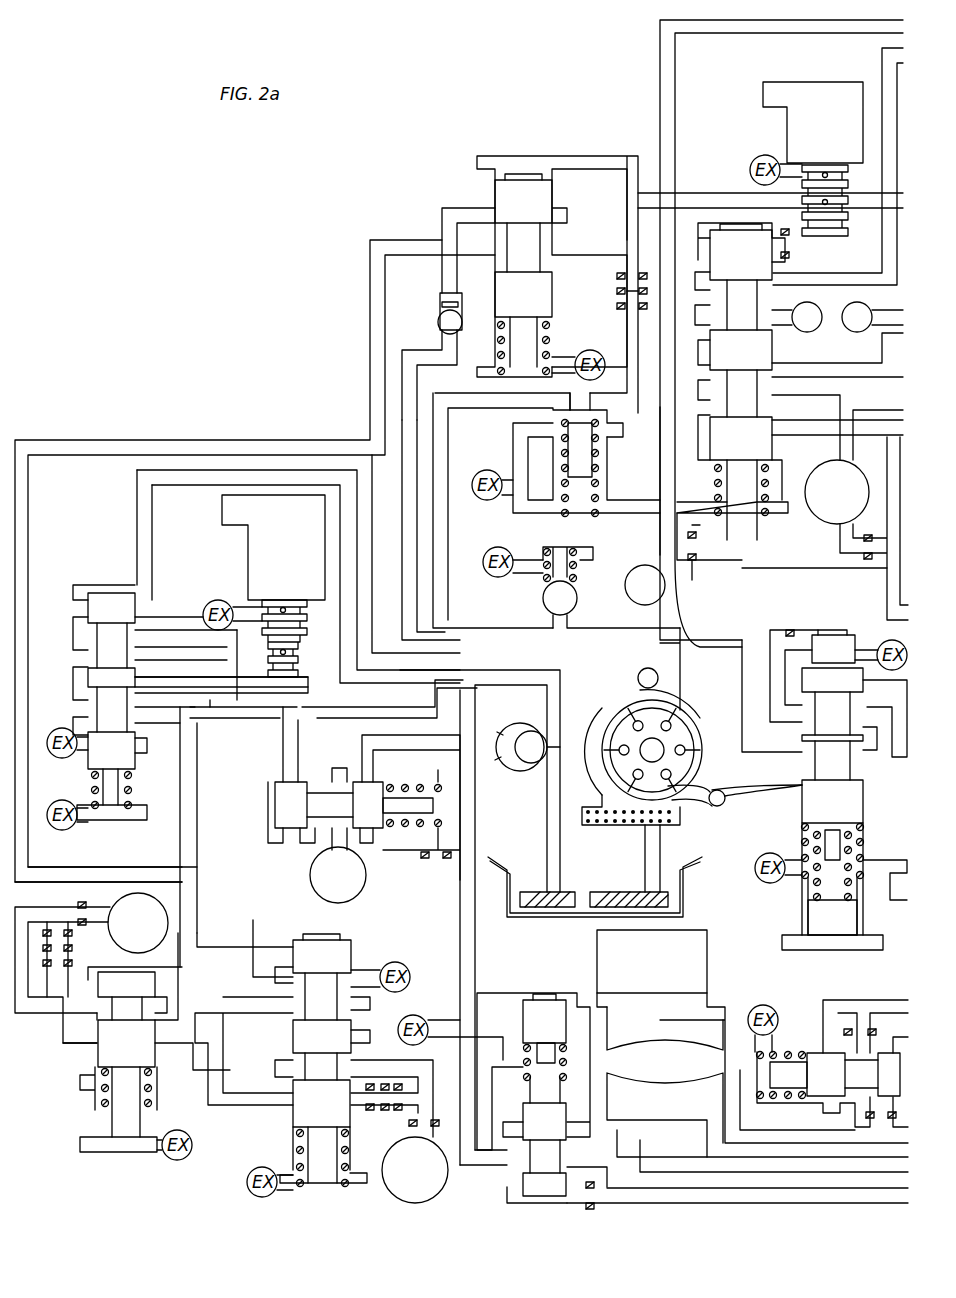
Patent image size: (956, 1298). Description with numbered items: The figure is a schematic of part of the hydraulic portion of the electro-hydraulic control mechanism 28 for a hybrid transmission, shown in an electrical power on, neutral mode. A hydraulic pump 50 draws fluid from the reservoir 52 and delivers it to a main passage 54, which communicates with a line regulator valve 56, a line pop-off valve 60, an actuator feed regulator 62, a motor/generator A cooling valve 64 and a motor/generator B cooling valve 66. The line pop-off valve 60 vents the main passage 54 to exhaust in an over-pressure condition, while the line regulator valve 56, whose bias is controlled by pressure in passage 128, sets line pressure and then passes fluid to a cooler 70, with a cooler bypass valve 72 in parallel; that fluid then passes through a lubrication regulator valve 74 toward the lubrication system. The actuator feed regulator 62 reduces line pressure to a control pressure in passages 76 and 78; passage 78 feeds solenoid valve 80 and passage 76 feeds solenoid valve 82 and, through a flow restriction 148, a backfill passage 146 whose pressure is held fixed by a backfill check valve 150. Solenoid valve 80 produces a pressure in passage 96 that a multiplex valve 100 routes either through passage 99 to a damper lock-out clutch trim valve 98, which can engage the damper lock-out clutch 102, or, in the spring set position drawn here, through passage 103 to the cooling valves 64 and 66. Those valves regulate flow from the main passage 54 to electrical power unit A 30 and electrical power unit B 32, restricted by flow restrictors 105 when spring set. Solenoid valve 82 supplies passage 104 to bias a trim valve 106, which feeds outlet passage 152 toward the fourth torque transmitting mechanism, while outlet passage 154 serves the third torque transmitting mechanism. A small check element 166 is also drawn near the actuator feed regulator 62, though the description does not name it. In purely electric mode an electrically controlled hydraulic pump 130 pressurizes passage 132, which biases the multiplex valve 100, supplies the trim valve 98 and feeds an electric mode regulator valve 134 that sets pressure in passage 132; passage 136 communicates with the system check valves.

The electro-hydraulic control mechanism 28 is at (306, 348).
The electrical power unit A 30 is at (149, 933).
The electrical power unit B 32 is at (428, 1180).
The hydraulic pump 50 is at (668, 678).
The reservoir 52 is at (695, 890).
The main passage 54 is at (700, 628).
The line regulator valve 56 is at (811, 954).
The line pop-off valve 60 is at (518, 606).
The actuator feed regulator 62 is at (524, 147).
The motor/generator A cooling valve 64 is at (107, 1166).
The motor/generator B cooling valve 66 is at (310, 1208).
The cooler 70 is at (672, 1098).
The cooler bypass valve 72 is at (708, 957).
The lubrication regulator valve 74 is at (795, 1101).
The passage 76 is at (575, 238).
The passage 78 is at (402, 240).
The solenoid valve 80 is at (297, 575).
The solenoid valve 82 is at (838, 130).
The passage 96 is at (292, 688).
The damper lock-out clutch trim valve 98 is at (283, 849).
The passage 99 is at (225, 720).
The multiplex valve 100 is at (103, 571).
The damper lock-out clutch 102 is at (357, 885).
The passage 103 is at (182, 846).
The passage 104 is at (815, 244).
The flow restrictor 105 is at (40, 979).
The trim valve 106 is at (730, 212).
The passage 128 is at (870, 968).
The electrically controlled hydraulic pump 130 is at (525, 775).
The passage 132 is at (545, 676).
The electric mode regulator valve 134 is at (537, 975).
The passage 136 is at (640, 1205).
The backfill passage 146 is at (618, 340).
The flow restriction 148 is at (604, 285).
The backfill check valve 150 is at (604, 448).
The outlet passage 152 is at (660, 493).
The outlet passage 154 is at (797, 412).
The check ball 166 is at (437, 326).